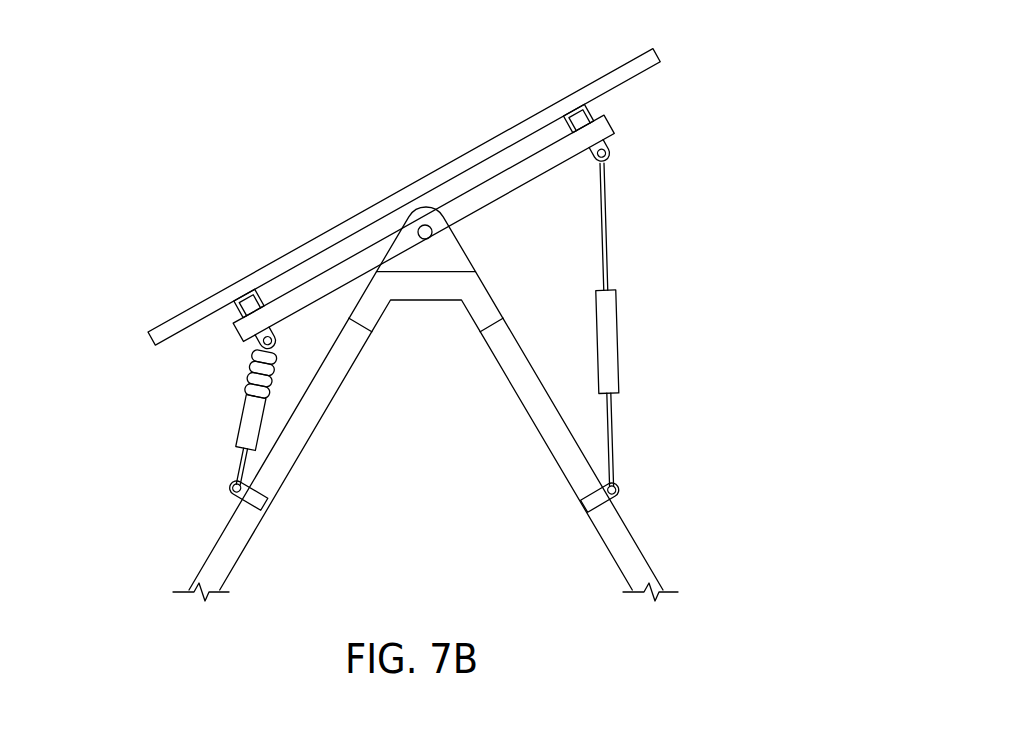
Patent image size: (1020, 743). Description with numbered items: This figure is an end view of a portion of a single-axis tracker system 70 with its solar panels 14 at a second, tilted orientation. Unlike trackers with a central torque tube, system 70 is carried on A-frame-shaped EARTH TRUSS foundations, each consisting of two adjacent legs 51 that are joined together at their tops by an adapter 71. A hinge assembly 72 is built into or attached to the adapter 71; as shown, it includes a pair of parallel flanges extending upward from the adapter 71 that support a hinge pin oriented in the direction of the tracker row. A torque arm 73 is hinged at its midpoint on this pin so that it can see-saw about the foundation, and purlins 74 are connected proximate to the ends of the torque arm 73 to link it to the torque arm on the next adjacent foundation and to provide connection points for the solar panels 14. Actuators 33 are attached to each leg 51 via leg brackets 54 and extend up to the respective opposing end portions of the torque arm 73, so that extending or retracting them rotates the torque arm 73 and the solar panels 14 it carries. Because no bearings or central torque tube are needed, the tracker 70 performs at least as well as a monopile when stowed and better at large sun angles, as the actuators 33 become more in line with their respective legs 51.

The tracker system 70 is at (197, 118).
The solar panel 14 is at (658, 52).
The purlins 74 is at (596, 109).
The torque arm 73 is at (614, 128).
The hinge assembly 72 is at (436, 232).
The adapter 71 is at (425, 300).
The legs 51 is at (210, 542).
The leg brackets 54 is at (268, 505).
The actuators 33 is at (240, 420).